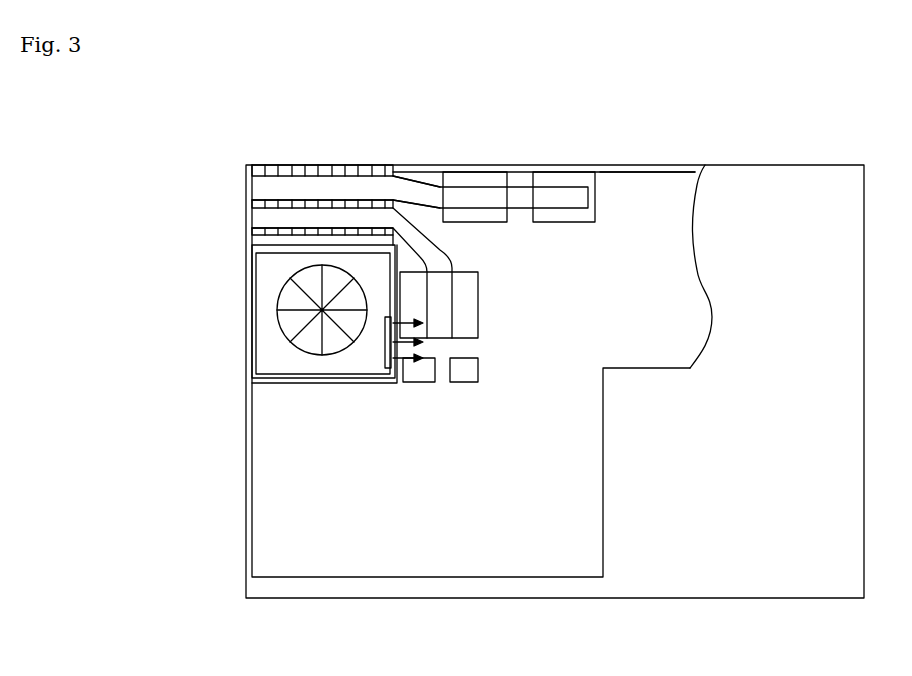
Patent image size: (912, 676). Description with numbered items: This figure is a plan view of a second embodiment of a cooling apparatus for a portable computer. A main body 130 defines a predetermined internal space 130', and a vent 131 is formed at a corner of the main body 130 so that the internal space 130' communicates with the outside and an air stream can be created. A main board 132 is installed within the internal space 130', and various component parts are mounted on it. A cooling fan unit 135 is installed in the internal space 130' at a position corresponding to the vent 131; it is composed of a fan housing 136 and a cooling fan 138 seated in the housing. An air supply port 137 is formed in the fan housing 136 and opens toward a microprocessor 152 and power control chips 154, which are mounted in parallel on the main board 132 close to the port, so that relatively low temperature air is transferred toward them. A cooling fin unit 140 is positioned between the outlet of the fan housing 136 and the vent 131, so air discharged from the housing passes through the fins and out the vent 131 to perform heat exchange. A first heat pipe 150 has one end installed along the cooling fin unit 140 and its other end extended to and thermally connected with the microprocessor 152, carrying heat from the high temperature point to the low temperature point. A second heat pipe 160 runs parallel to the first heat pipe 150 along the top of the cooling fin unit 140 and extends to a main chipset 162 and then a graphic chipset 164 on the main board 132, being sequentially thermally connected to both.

The main body 130 is at (555, 340).
The internal space 130' is at (749, 431).
The vent 131 is at (323, 165).
The main board 132 is at (637, 200).
The cooling fan unit 135 is at (246, 333).
The fan housing 136 is at (262, 297).
The air supply port 137 is at (383, 340).
The cooling fan 138 is at (287, 327).
The cooling fin unit 140 is at (252, 203).
The first heat pipe 150 is at (252, 217).
The microprocessor 152 is at (470, 312).
The power control chip 154 is at (465, 372).
The second heat pipe 160 is at (406, 189).
The main chipset 162 is at (473, 183).
The graphic chipset 164 is at (563, 183).